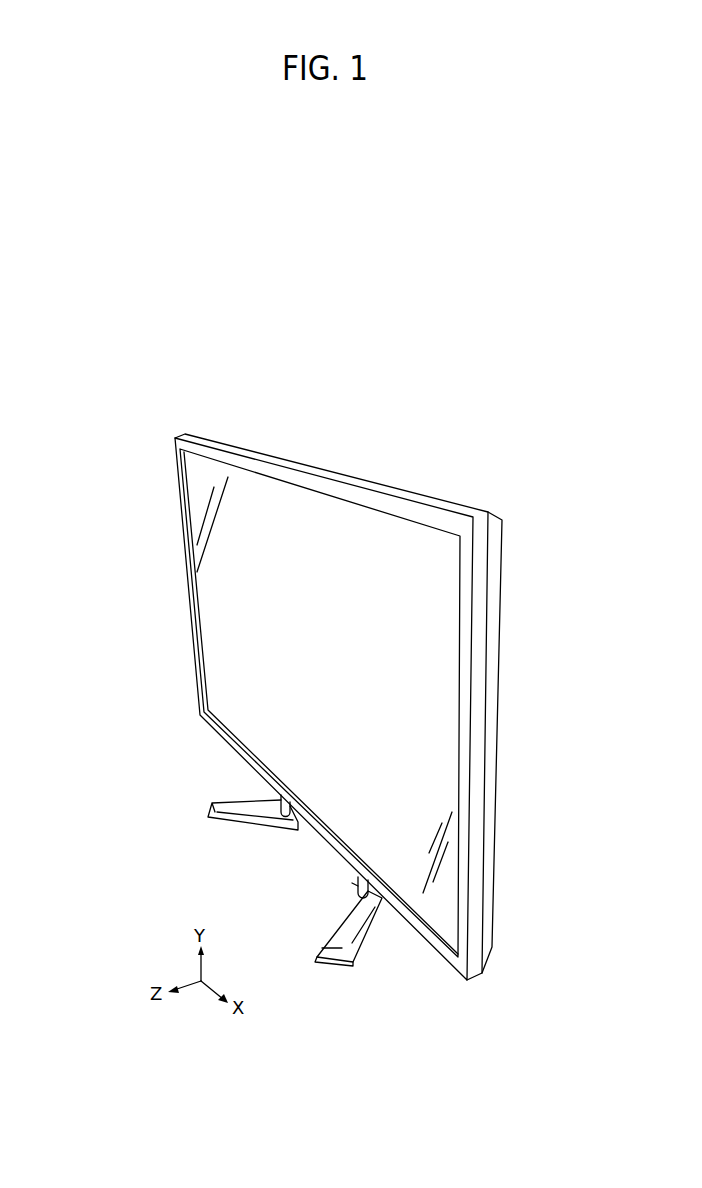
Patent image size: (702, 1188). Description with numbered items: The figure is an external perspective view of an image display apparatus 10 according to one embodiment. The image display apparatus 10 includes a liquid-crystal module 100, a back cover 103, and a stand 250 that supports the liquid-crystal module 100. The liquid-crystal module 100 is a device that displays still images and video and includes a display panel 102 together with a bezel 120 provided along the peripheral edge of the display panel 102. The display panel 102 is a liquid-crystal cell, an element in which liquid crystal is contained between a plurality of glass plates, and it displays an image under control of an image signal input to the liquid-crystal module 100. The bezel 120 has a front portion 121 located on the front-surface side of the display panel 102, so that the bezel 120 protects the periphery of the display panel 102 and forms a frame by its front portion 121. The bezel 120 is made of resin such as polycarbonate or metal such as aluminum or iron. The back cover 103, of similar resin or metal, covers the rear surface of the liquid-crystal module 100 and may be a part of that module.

The image display apparatus 10 is at (126, 343).
The liquid-crystal module 100 is at (402, 436).
The display panel 102 is at (287, 512).
The back cover 103 is at (493, 512).
The bezel 120 is at (434, 505).
The front portion 121 is at (462, 682).
The stand 250 is at (231, 805).